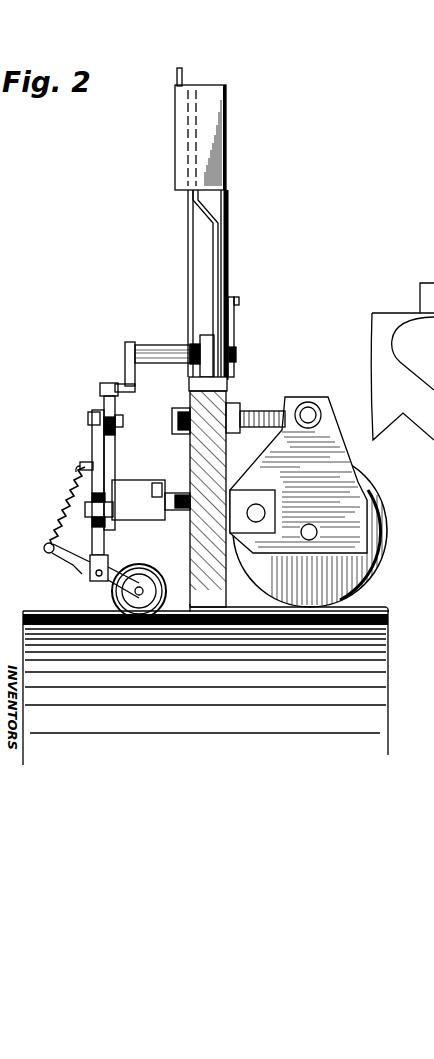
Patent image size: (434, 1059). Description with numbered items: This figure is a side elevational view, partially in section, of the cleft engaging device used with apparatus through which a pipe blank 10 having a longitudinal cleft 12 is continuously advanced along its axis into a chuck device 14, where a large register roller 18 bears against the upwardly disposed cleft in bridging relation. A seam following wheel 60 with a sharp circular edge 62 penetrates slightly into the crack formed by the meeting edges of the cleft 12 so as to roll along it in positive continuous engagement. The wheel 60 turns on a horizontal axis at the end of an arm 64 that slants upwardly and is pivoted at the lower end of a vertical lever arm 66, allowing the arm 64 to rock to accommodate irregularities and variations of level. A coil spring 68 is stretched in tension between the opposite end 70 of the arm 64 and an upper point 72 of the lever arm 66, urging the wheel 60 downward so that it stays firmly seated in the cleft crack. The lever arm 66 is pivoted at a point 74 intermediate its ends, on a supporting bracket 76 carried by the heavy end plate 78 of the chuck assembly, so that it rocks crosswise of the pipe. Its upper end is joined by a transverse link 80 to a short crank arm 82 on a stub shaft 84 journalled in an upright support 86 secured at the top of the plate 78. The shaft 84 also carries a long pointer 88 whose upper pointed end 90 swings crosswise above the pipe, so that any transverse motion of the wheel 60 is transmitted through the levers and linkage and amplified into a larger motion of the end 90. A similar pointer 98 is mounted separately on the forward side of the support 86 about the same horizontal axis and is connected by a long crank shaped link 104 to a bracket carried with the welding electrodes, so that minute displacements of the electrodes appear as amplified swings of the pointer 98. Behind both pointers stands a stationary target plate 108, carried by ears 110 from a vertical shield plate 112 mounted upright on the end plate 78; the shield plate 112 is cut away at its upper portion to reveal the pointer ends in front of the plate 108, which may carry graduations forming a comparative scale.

The pipe blank 10 is at (382, 669).
The longitudinal cleft 12 is at (370, 609).
The chuck device 14 is at (228, 395).
The register roller 18 is at (367, 584).
The seam following wheel 60 is at (163, 626).
The sharp circular edge 62 is at (139, 619).
The arm 64 is at (88, 578).
The lever arm 66 is at (106, 547).
The coil spring 68 is at (70, 488).
The opposite end of the arm 70 is at (49, 554).
The upper point of the vertical arm 72 is at (88, 458).
The pivot point 74 is at (92, 518).
The supporting bracket 76 is at (130, 487).
The end plate 78 is at (190, 456).
The transverse link 80 is at (100, 396).
The crank arm 82 is at (125, 358).
The stub shaft 84 is at (237, 354).
The upright support 86 is at (200, 372).
The pointer 88 is at (188, 300).
The upper pointed end 90 is at (190, 88).
The pointer 98 is at (226, 233).
The crank shaped link 104 is at (235, 323).
The target plate 108 is at (176, 77).
The ears 110 is at (213, 138).
The shield plate 112 is at (229, 252).